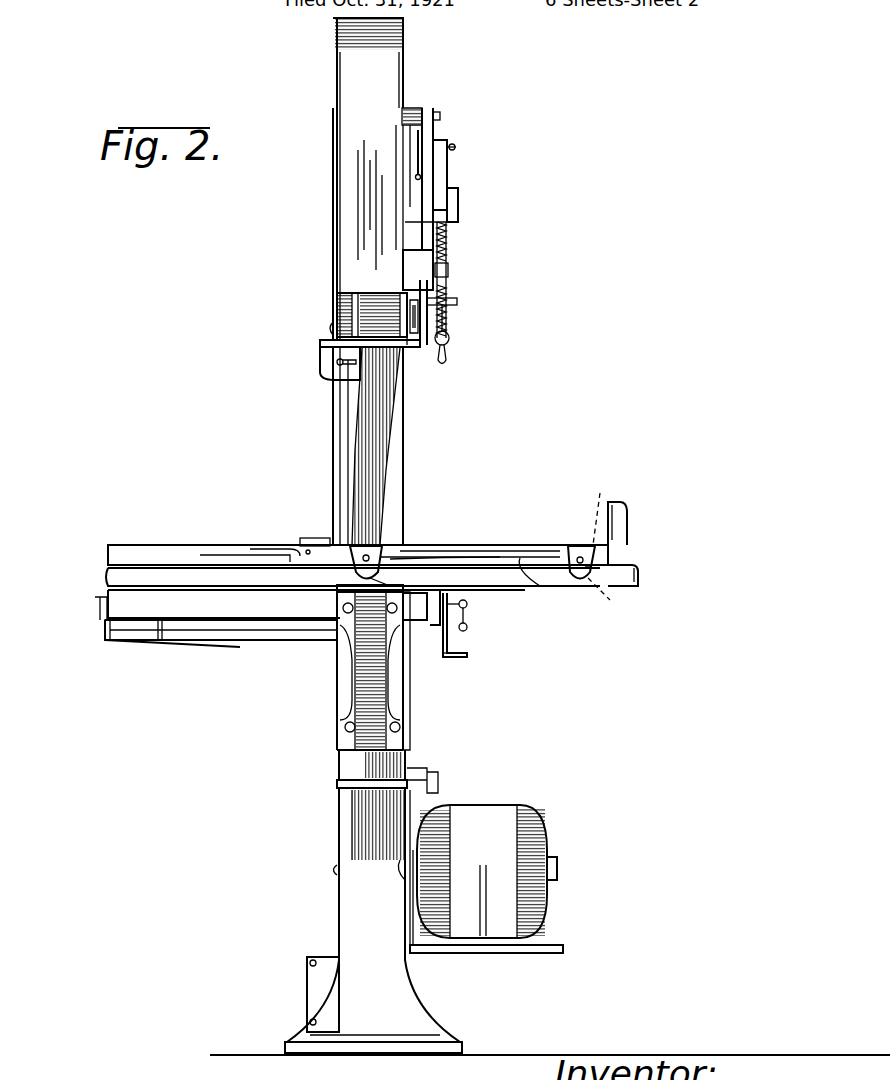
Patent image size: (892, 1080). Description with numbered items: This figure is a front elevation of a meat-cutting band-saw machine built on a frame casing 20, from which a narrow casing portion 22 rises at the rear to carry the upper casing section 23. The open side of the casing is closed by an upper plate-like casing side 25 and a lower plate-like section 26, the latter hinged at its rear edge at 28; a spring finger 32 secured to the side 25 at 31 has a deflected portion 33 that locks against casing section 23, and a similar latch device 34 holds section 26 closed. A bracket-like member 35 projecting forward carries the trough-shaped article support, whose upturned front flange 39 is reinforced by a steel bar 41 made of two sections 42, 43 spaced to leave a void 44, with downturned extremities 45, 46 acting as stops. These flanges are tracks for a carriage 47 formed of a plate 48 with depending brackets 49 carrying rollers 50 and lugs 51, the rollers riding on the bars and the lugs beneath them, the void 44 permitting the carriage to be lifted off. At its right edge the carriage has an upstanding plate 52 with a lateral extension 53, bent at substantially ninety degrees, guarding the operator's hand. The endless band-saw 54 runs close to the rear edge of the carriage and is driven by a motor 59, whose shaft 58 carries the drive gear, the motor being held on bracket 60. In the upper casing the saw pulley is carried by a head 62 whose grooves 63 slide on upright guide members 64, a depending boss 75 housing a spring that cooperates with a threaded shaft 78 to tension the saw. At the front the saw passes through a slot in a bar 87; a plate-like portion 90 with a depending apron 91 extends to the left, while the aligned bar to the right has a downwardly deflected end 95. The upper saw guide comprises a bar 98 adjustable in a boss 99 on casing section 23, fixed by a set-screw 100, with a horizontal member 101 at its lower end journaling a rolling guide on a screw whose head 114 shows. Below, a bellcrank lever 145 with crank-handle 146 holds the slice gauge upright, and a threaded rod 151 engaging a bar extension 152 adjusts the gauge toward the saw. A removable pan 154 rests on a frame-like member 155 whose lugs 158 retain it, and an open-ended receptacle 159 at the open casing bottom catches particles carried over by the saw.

The frame casing 20 is at (339, 756).
The casing portion 22 is at (400, 472).
The upper casing section 23 is at (358, 229).
The upper plate-like casing side 25 is at (333, 192).
The lower plate-like casing section 26 is at (339, 778).
The hinge 28 is at (337, 665).
The securing point of spring finger 31 is at (333, 329).
The spring finger 32 is at (370, 320).
The deflected portion 33 is at (420, 345).
The latch device 34 is at (350, 786).
The bracket-like member 35 is at (395, 710).
The front edge flange 39 is at (345, 610).
The bar 41 is at (255, 556).
The bar section 42 is at (210, 555).
The bar section 43 is at (632, 563).
The void 44 is at (620, 562).
The downwardly deflected extremity 45 is at (108, 577).
The downwardly deflected extremity 46 is at (640, 576).
The carriage 47 is at (508, 548).
The carriage plate 48 is at (493, 522).
The depending brackets 49 is at (378, 546).
The journaled rollers 50 is at (601, 498).
The laterally-extending studs 51 is at (390, 580).
The upstanding plate-like portion 52 is at (618, 500).
The lateral extension 53 is at (622, 512).
The endless band-saw 54 is at (357, 460).
The motor shaft 58 is at (557, 870).
The motor 59 is at (500, 862).
The motor bracket 60 is at (480, 953).
The head 62 is at (440, 152).
The grooves 63 is at (437, 168).
The upright guide members 64 is at (427, 132).
The depending boss 75 is at (458, 208).
The threaded shaft 78 is at (450, 338).
The bar 87 is at (306, 538).
The plate-like portion 90 is at (165, 522).
The depending plate-like portion 91 is at (112, 552).
The downwardly deflected end 95 is at (525, 590).
The bar 98 is at (447, 232).
The boss 99 is at (425, 264).
The set-screw 100 is at (449, 270).
The guide member 101 is at (335, 350).
The screw head 114 is at (338, 368).
The lever 145 is at (450, 640).
The crank-handle 146 is at (460, 657).
The threaded rod 151 is at (468, 605).
The bar extension 152 is at (467, 627).
The removable pan 154 is at (112, 642).
The frame-like member 155 is at (240, 637).
The upwardly-extending lugs 158 is at (162, 630).
The open-ended receptacle 159 is at (320, 975).